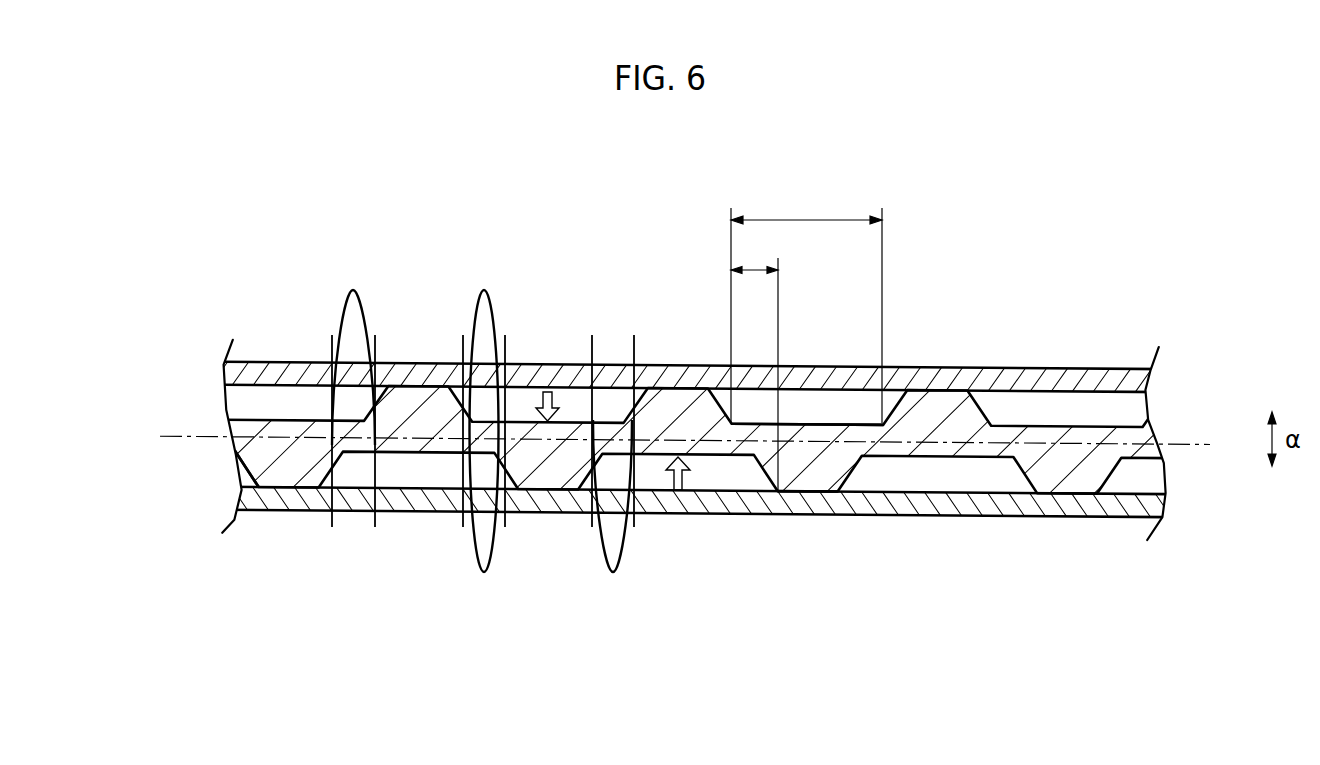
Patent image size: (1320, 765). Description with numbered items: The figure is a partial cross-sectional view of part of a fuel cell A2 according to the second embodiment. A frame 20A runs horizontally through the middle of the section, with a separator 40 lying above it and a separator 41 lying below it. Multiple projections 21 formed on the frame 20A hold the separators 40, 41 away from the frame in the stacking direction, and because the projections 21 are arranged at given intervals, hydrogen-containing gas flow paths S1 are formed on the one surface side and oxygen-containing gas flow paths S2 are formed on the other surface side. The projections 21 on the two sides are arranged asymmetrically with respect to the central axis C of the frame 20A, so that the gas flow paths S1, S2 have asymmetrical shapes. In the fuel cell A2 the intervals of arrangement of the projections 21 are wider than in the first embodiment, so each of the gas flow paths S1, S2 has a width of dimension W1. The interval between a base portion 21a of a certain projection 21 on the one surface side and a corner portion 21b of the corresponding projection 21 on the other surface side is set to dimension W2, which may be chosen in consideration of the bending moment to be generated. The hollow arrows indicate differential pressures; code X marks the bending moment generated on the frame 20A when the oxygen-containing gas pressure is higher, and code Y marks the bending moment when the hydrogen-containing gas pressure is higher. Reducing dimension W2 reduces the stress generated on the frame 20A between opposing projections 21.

The separator 40 is at (281, 364).
The projection 21 is at (404, 395).
The base portion 21a is at (720, 426).
The corner portion 21b is at (780, 495).
The frame 20A is at (235, 462).
The separator 41 is at (341, 508).
The fuel cell A2 is at (214, 332).
The hydrogen-containing gas flow path S1 is at (573, 398).
The oxygen-containing gas flow path S2 is at (427, 475).
The dimension W1 is at (806, 307).
The dimension W2 is at (754, 362).
The central axis C is at (697, 443).
The bending moment X is at (353, 290).
The bending moment Y is at (483, 573).